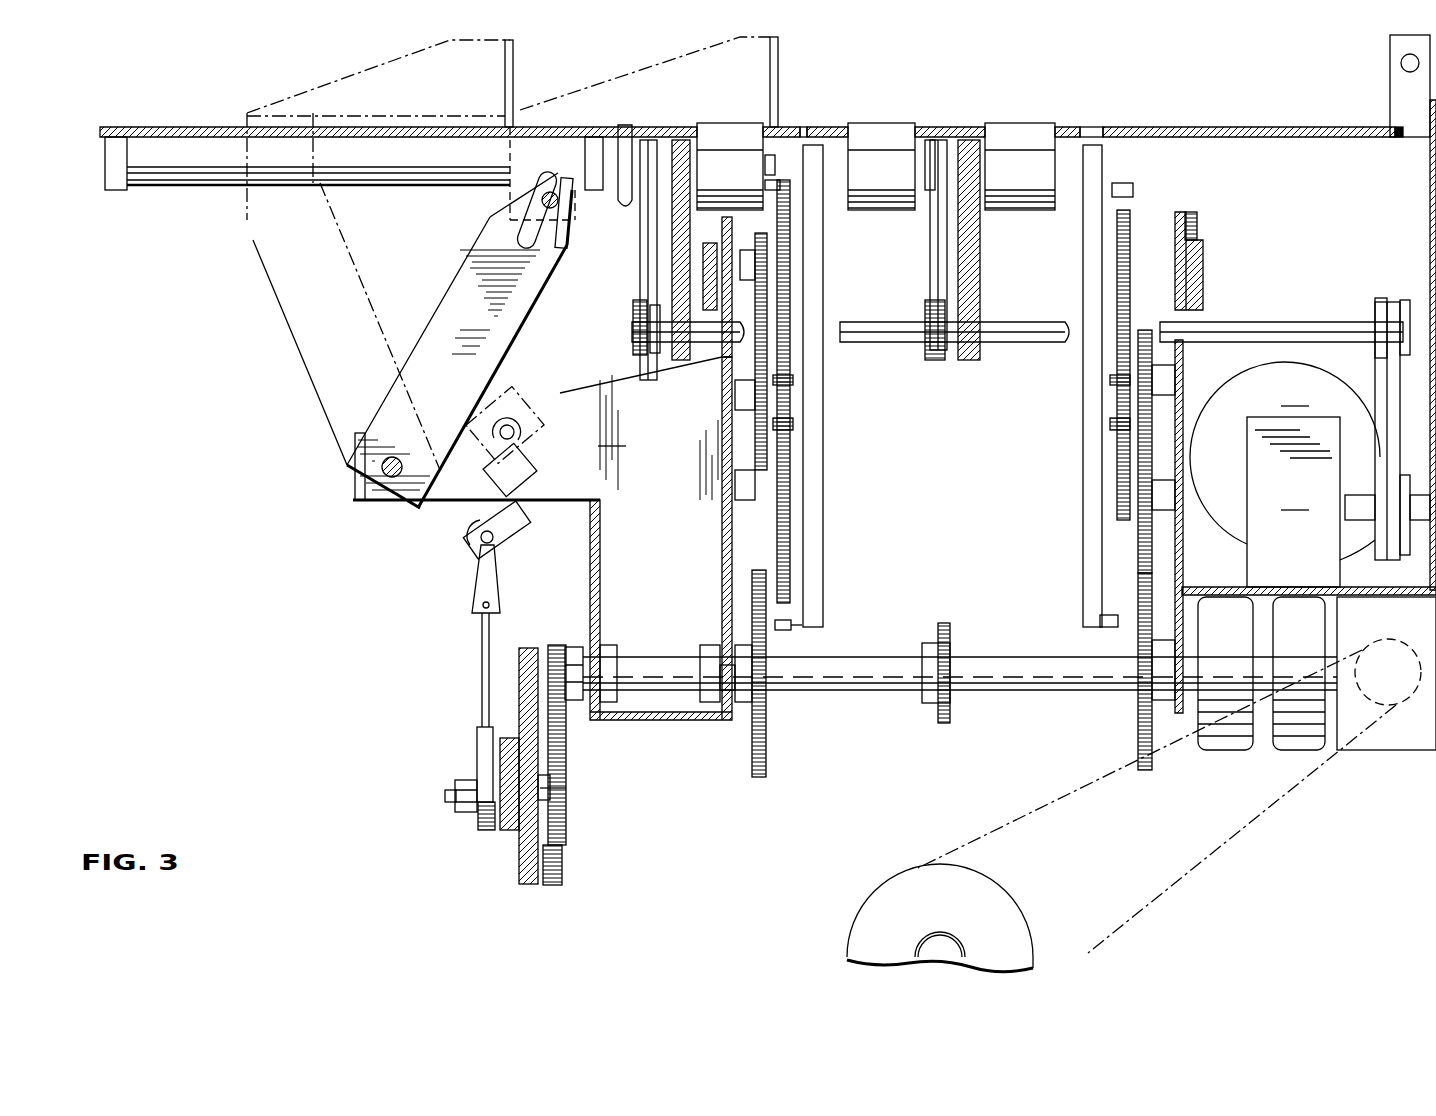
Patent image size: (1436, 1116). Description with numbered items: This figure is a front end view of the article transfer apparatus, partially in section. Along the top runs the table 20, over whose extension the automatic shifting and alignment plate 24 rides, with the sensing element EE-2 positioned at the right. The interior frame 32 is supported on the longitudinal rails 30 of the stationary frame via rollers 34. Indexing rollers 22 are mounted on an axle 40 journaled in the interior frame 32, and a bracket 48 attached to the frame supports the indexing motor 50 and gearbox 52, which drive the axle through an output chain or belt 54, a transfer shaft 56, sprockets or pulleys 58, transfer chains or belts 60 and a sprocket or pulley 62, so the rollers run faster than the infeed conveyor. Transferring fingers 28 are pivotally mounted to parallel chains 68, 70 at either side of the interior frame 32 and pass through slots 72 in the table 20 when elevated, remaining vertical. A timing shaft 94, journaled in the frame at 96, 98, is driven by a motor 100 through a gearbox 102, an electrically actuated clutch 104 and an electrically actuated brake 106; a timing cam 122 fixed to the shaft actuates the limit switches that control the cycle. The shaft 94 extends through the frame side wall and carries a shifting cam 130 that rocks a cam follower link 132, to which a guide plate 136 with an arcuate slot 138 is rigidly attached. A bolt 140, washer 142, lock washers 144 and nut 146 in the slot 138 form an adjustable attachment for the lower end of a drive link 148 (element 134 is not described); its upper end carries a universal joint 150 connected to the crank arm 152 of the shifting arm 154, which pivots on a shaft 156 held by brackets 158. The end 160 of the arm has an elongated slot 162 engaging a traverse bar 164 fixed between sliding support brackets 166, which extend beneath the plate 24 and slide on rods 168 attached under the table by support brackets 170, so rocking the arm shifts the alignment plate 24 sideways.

The table 20 is at (185, 128).
The indexing rollers 22 is at (644, 126).
The automatic shifting and alignment plate 24 is at (780, 82).
The transferring fingers 28 is at (822, 445).
The longitudinal rails 30 is at (705, 280).
The interior frame 32 is at (682, 362).
The rollers 34 is at (732, 228).
The axle 40 is at (772, 168).
The bracket 48 is at (1430, 262).
The indexing motor 50 is at (1285, 453).
The gearbox 52 is at (1293, 502).
The output chain or belt 54 is at (1392, 430).
The transfer shaft 56 is at (899, 322).
The sprockets or pulleys 58 is at (640, 352).
The transfer chains or belts 60 is at (645, 260).
The sprocket or pulley 62 is at (638, 200).
The chain 68 is at (770, 184).
The chain 70 is at (782, 628).
The slots 72 is at (810, 130).
The timing shaft 94 is at (885, 690).
The journal 96 is at (742, 723).
The journal 98 is at (1160, 740).
The motor 100 is at (870, 904).
The gearbox 102 is at (1392, 750).
The electrically actuated clutch 104 is at (1290, 740).
The electrically actuated brake 106 is at (1224, 740).
The timing cam 122 is at (950, 705).
The shifting cam 130 is at (566, 820).
The cam follower link 132 is at (528, 880).
The hub 134 is at (555, 880).
The guide plate 136 is at (506, 830).
The arcuate slot 138 is at (550, 790).
The bolt 140 is at (454, 800).
The washer 142 is at (487, 760).
The lock washers 144 is at (480, 822).
The nut 146 is at (456, 785).
The drive link 148 is at (482, 683).
The universal joint 150 is at (512, 540).
The crank arm 152 is at (525, 468).
The shifting arm 154 is at (442, 304).
The shaft 156 is at (355, 478).
The brackets 158 is at (646, 538).
The end of shifting arm 160 is at (530, 195).
The elongated slot 162 is at (525, 235).
The traverse bar 164 is at (568, 240).
The sliding support brackets 166 is at (510, 150).
The rods 168 is at (190, 176).
The support brackets 170 is at (118, 190).
The element EE-2 is at (1395, 96).